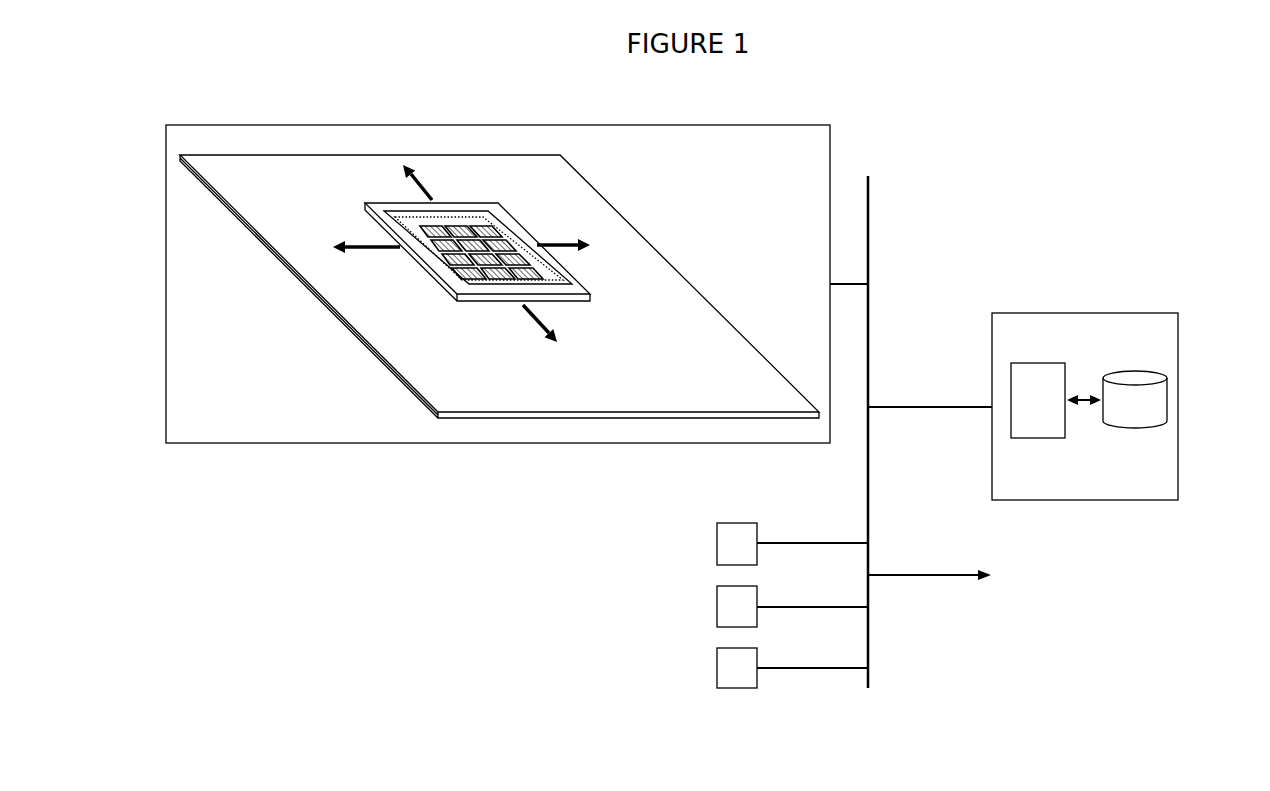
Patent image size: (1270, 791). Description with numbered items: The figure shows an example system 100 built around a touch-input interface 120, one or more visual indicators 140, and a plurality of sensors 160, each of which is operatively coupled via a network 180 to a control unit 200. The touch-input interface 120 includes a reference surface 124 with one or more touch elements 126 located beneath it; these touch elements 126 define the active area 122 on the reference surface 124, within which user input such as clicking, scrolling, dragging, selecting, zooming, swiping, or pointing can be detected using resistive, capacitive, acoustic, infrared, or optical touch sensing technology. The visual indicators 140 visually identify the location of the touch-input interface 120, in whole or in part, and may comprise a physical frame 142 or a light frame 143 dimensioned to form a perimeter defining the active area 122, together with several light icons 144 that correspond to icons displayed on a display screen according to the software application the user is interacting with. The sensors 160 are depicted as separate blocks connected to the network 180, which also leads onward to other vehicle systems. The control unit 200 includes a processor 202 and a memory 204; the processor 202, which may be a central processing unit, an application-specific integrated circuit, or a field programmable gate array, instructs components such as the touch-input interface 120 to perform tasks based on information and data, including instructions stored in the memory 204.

The system 100 is at (1065, 178).
The touch-input interface 120 is at (166, 398).
The active area 122 is at (569, 252).
The touch element 126 is at (550, 276).
The reference surface 124 is at (783, 410).
The visual indicator 140 is at (500, 252).
The physical frame 142 is at (500, 253).
The light frame 143 is at (500, 253).
The light icons 144 is at (455, 263).
The sensors 160 is at (737, 605).
The network 180 is at (870, 208).
The control unit 200 is at (1119, 406).
The processor 202 is at (1033, 439).
The memory 204 is at (1136, 429).